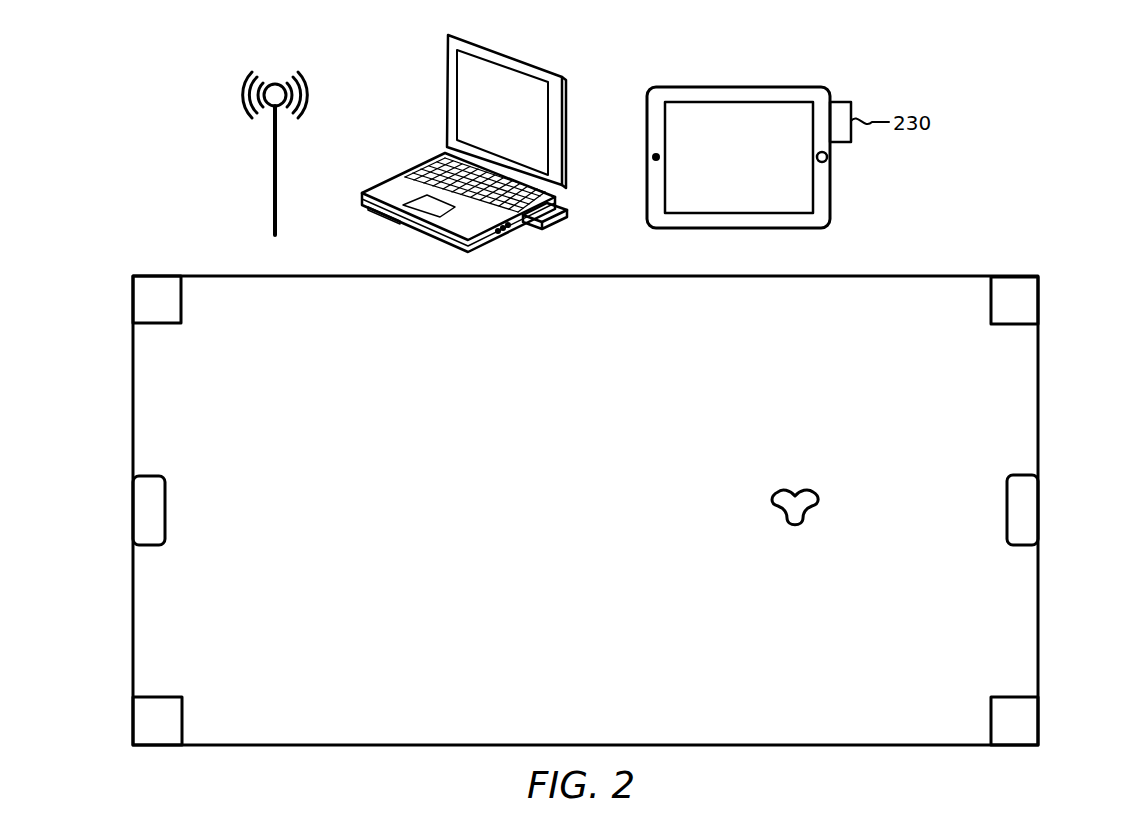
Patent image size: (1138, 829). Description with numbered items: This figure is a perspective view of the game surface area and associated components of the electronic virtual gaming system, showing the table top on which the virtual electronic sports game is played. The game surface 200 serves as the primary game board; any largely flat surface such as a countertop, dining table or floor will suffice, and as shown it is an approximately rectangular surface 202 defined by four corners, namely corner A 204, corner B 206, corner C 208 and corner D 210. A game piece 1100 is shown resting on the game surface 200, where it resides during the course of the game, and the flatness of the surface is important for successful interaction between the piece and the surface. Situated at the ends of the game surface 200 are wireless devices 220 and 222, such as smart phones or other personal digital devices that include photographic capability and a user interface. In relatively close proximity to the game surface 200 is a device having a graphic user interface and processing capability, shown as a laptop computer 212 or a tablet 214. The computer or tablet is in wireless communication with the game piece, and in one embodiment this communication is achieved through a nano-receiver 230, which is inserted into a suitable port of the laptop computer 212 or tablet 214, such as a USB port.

The game surface 200 is at (115, 153).
The display surface 202 is at (1038, 408).
The corner A 204 is at (1030, 300).
The corner B 206 is at (1028, 722).
The corner C 208 is at (143, 720).
The corner D 210 is at (143, 300).
The laptop computer 212 is at (507, 53).
The tablet 214 is at (742, 86).
The wireless device 220 is at (1028, 512).
The wireless device 222 is at (143, 510).
The nano-receiver 230 is at (560, 226).
The object 1100 is at (827, 478).